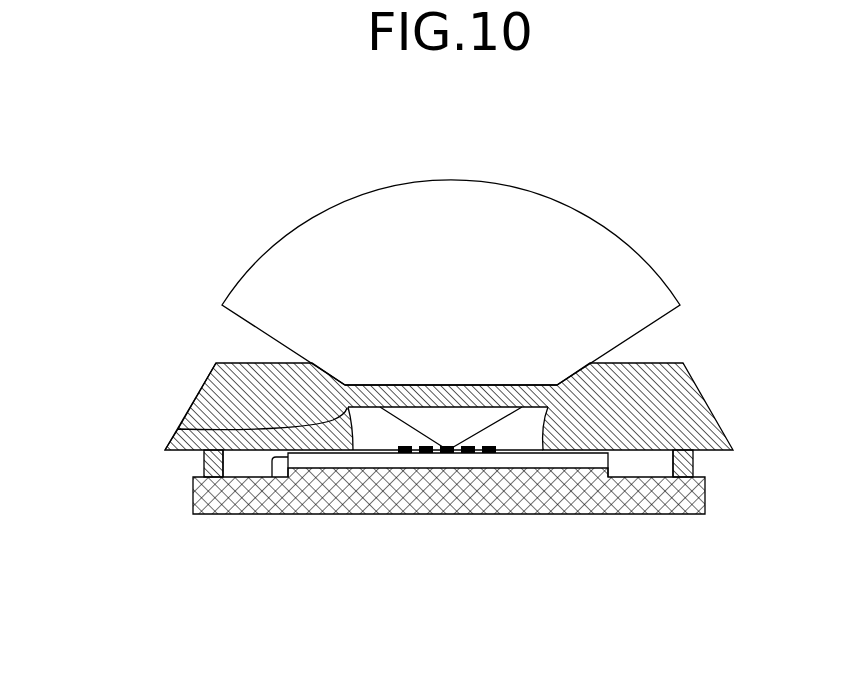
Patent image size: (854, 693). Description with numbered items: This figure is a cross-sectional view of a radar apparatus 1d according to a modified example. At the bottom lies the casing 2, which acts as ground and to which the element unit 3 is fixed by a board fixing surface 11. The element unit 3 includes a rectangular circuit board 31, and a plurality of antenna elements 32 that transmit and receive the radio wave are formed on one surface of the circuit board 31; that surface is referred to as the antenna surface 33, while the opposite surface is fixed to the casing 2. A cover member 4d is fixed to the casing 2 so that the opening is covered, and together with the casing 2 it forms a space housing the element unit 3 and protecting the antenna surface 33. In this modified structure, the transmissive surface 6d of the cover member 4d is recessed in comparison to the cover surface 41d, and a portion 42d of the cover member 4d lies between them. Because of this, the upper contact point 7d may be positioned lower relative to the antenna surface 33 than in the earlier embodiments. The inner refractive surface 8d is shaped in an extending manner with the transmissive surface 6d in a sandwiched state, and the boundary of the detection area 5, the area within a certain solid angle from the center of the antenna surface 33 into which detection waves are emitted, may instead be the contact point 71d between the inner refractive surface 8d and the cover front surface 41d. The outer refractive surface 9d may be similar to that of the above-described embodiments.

The radar apparatus 1d is at (212, 144).
The casing 2 is at (705, 503).
The element unit 3 is at (622, 515).
The cover member 4d is at (680, 408).
The cover surface 41d is at (657, 363).
The bridge portion of frame 42d is at (384, 384).
The detection area 5 is at (377, 192).
The transmissive surface 6d is at (474, 413).
The upper contact point 7d is at (178, 429).
The contact point 71d is at (302, 363).
The inner refractive surface 8d is at (357, 456).
The outer refractive surface 9d is at (204, 383).
The board fixing surface 11 is at (276, 514).
The circuit board 31 is at (388, 465).
The antenna elements 32 is at (441, 454).
The antenna surface 33 is at (506, 447).